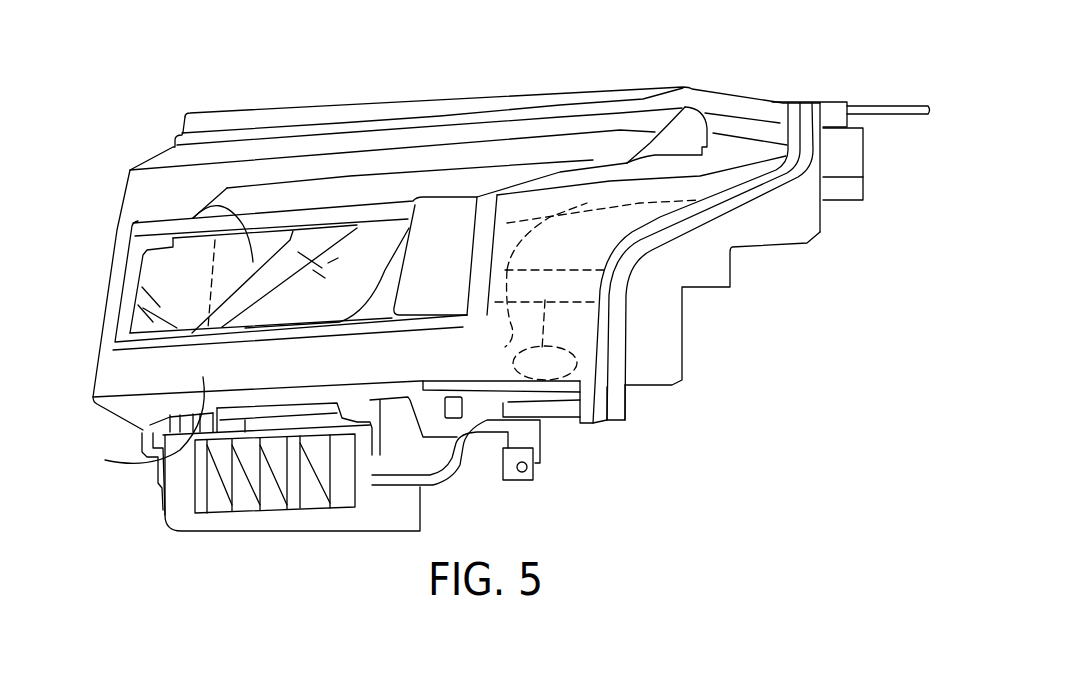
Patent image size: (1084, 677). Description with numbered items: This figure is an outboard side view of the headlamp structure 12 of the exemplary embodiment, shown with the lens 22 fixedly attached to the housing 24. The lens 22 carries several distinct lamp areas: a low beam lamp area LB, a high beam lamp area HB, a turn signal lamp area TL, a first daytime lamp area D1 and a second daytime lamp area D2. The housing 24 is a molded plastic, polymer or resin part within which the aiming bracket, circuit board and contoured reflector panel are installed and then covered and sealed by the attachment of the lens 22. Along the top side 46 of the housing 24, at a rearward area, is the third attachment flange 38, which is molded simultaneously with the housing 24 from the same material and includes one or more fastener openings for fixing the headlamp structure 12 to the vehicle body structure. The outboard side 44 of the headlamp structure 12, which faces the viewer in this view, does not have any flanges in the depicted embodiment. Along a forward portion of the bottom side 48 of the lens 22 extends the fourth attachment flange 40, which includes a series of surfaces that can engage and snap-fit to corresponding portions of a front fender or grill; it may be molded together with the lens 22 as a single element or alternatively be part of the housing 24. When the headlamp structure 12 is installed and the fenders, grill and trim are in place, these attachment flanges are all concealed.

The headlamp structure 12 is at (195, 78).
The lens 22 is at (283, 182).
The first daytime lamp area D1 is at (340, 168).
The turn signal lamp area TL is at (385, 193).
The low beam lamp area LB is at (220, 200).
The high beam lamp area HB is at (177, 283).
The top side 46 is at (621, 83).
The housing 24 is at (782, 102).
The third attachment flange 38 is at (890, 106).
The outboard side 44 is at (648, 305).
The fourth attachment flange 40 is at (313, 493).
The bottom side 48 is at (440, 492).
The second daytime lamp area D2 is at (150, 464).